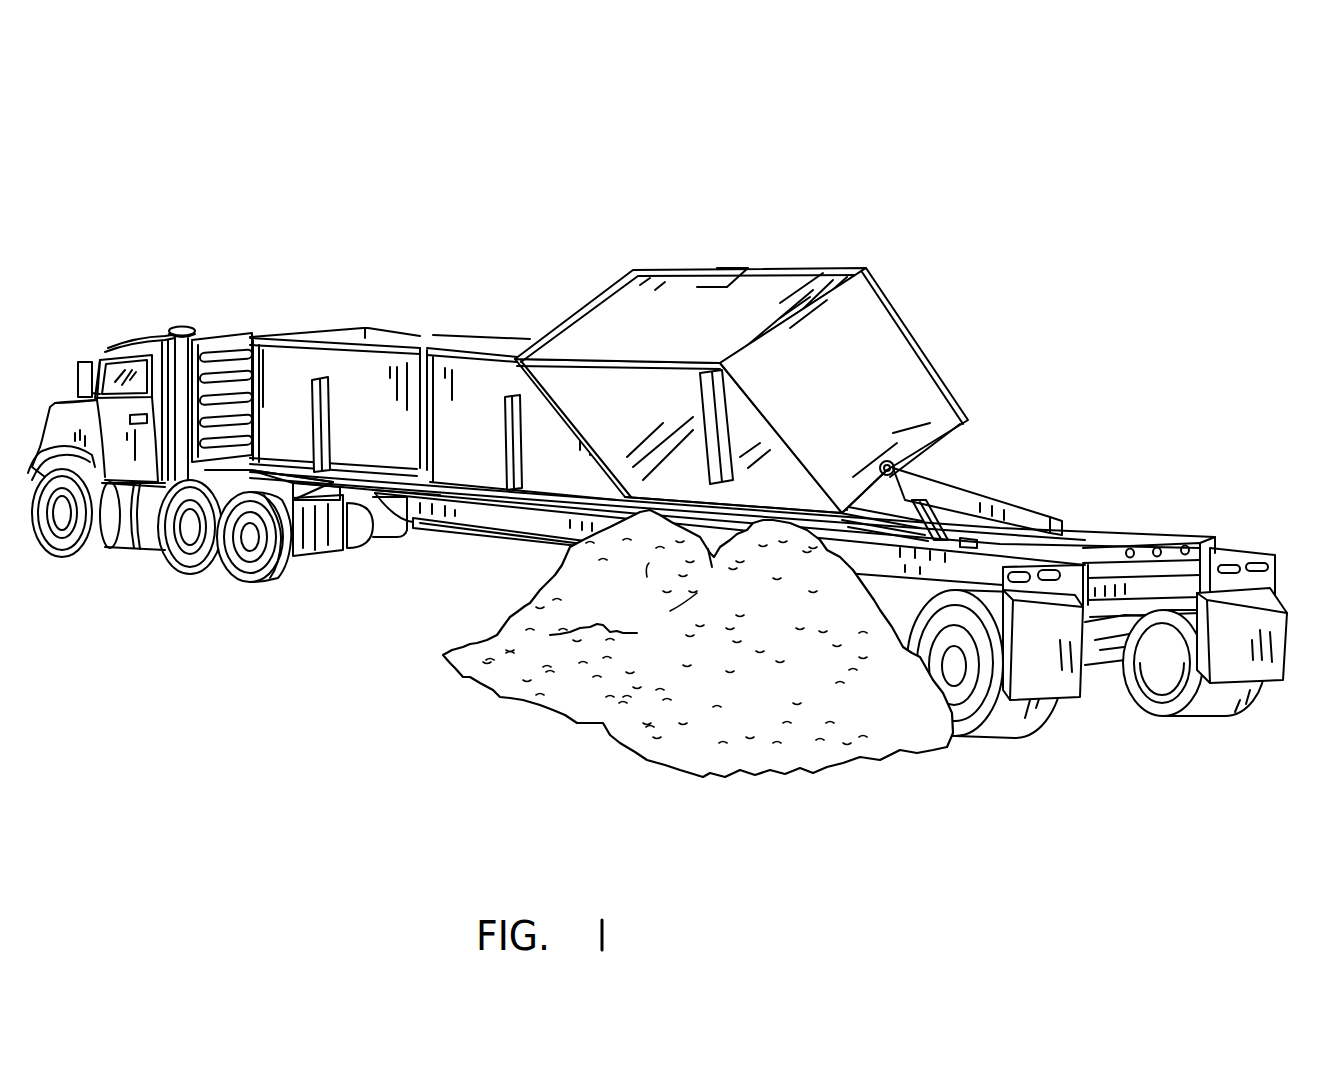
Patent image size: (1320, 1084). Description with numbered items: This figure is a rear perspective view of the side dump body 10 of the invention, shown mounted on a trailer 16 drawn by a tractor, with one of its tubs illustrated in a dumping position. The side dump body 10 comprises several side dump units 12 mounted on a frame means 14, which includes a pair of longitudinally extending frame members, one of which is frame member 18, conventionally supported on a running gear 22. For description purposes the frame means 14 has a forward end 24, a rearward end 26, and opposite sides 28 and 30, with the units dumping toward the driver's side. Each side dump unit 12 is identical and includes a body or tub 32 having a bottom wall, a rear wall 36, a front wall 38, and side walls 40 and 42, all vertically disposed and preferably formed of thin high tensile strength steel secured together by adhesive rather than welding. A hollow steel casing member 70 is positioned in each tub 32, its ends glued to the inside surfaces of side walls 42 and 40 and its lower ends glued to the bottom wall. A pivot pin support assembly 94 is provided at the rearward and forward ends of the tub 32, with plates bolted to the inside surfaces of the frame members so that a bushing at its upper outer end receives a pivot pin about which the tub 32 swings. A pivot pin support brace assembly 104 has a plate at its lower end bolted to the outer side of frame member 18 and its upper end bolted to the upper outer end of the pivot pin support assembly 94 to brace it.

The side dump body 10 is at (627, 227).
The side dump unit 12 is at (350, 313).
The frame means 14 is at (455, 547).
The trailer 16 is at (1113, 507).
The frame member 18 is at (540, 520).
The running gear 22 is at (1048, 738).
The forward end 24 is at (135, 502).
The rearward end 26 is at (1213, 540).
The side 28 is at (407, 650).
The side 30 is at (1095, 463).
The tub 32 is at (278, 368).
The rear wall 36 is at (813, 393).
The front wall 38 is at (576, 410).
The side wall 40 is at (760, 510).
The side wall 42 is at (678, 333).
The casing member 70 is at (318, 408).
The pivot pin support assembly 94 is at (982, 490).
The pivot pin support brace assembly 104 is at (890, 470).